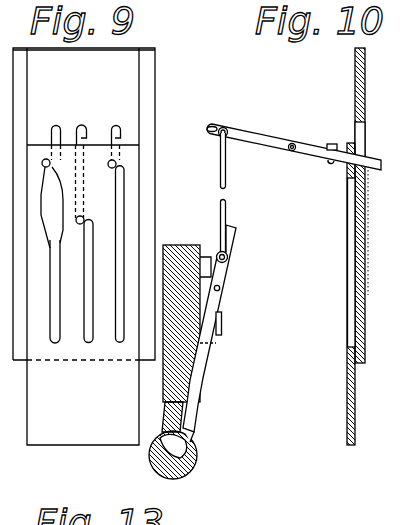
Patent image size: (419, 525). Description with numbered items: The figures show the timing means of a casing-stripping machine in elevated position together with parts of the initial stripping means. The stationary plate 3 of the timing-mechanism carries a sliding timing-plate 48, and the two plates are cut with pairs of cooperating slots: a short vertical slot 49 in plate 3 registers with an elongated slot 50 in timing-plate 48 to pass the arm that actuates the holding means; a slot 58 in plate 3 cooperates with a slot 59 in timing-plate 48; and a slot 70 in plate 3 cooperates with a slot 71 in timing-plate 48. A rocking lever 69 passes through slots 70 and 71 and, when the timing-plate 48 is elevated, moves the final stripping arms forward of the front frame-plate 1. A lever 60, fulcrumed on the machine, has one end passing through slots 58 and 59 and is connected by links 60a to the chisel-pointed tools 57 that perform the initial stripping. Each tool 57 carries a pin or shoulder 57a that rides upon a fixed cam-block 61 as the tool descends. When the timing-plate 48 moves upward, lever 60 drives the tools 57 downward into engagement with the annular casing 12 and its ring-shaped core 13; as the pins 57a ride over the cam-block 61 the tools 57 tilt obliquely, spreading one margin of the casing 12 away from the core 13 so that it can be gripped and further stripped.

In FIG. 10, the front frame-plate 1 is at (180, 310).
In FIG. 9, the stationary plate 3 is at (130, 82).
In FIG. 10, the stationary plate 3 is at (365, 310).
In FIG. 10, the annular casing 12 is at (193, 462).
In FIG. 10, the core 13 is at (183, 445).
In FIG. 9, the timing-plate 48 is at (130, 215).
In FIG. 10, the timing-plate 48 is at (355, 395).
In FIG. 9, the short vertical slot 49 is at (116, 125).
In FIG. 9, the elongated slot 50 is at (120, 343).
In FIG. 9, the chisel-pointed tool 57 is at (116, 163).
In FIG. 10, the chisel-pointed tool 57 is at (200, 382).
In FIG. 10, the pin or shoulder 57a is at (220, 288).
In FIG. 9, the slot 58 is at (52, 127).
In FIG. 10, the slot 58 is at (365, 135).
In FIG. 9, the cooperating slot 59 is at (55, 343).
In FIG. 10, the cooperating slot 59 is at (352, 303).
In FIG. 9, the lever 60 is at (67, 206).
In FIG. 10, the lever 60 is at (266, 136).
In FIG. 10, the link 60a is at (226, 180).
In FIG. 10, the cam-block 61 is at (222, 340).
In FIG. 9, the rocking lever 69 is at (83, 217).
In FIG. 9, the slot 70 is at (80, 124).
In FIG. 9, the cooperating slot 71 is at (89, 343).